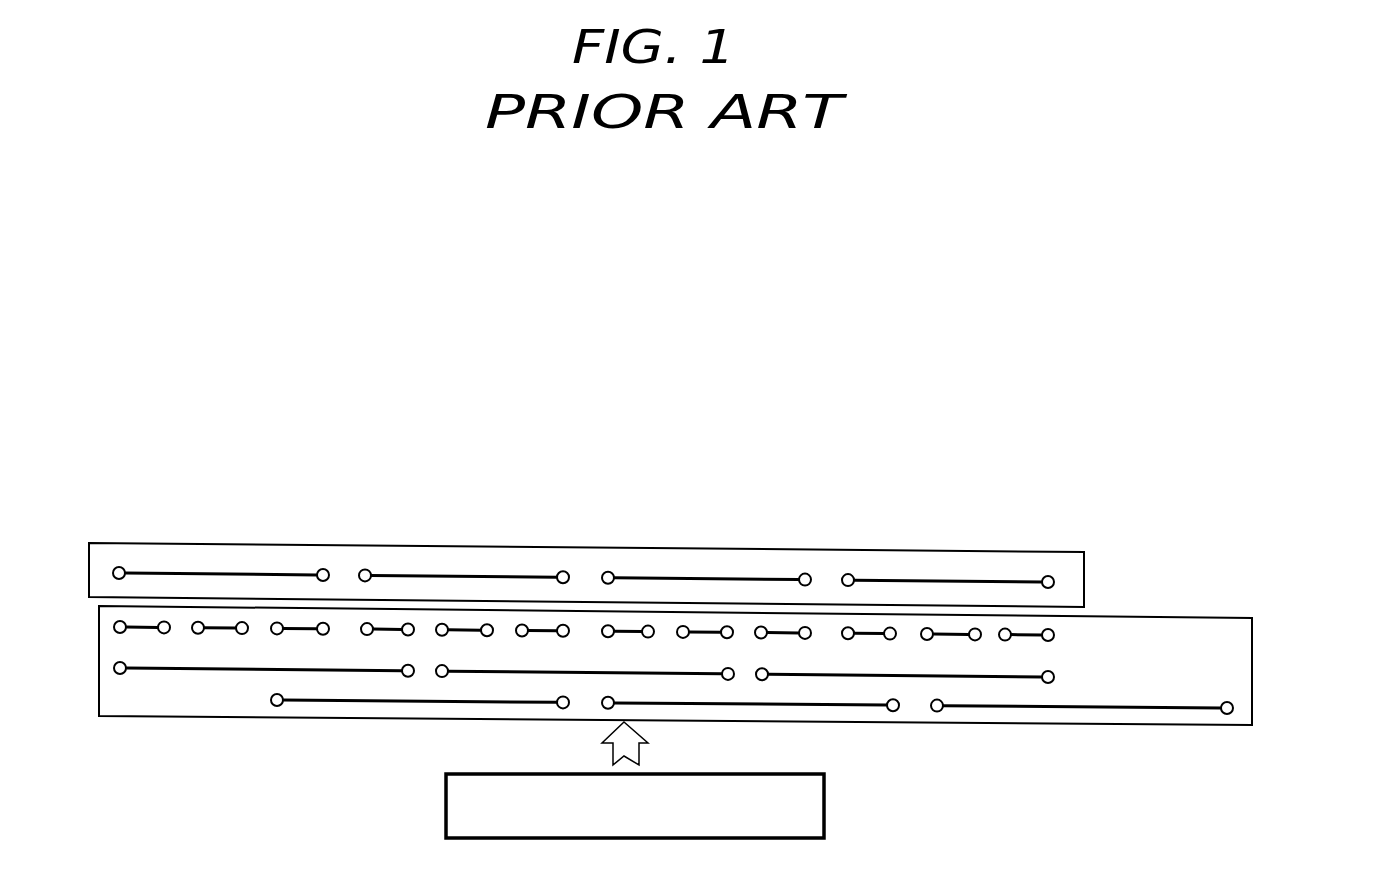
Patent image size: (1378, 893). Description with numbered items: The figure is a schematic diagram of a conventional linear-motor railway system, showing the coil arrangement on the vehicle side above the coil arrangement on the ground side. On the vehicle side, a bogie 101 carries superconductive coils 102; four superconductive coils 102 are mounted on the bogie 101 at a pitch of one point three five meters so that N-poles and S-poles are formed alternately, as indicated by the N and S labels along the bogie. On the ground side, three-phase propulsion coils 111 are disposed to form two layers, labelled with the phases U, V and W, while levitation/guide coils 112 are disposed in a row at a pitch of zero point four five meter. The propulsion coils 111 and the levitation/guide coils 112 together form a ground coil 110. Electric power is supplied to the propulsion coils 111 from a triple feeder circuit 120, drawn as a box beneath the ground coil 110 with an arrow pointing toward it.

The bogie 101 is at (628, 546).
The superconductive coils 102 is at (903, 578).
The ground coil 110 is at (729, 665).
The propulsion coils 111 is at (1108, 692).
The levitation/guide coils 112 is at (1063, 642).
The triple feeder circuit 120 is at (826, 798).